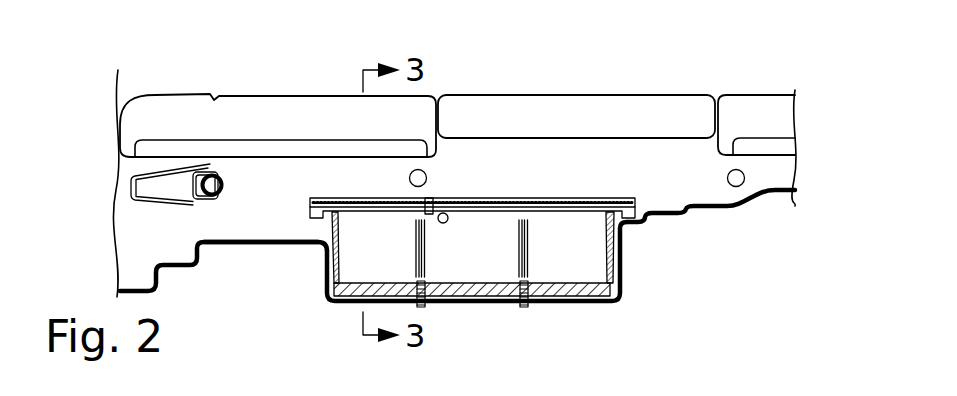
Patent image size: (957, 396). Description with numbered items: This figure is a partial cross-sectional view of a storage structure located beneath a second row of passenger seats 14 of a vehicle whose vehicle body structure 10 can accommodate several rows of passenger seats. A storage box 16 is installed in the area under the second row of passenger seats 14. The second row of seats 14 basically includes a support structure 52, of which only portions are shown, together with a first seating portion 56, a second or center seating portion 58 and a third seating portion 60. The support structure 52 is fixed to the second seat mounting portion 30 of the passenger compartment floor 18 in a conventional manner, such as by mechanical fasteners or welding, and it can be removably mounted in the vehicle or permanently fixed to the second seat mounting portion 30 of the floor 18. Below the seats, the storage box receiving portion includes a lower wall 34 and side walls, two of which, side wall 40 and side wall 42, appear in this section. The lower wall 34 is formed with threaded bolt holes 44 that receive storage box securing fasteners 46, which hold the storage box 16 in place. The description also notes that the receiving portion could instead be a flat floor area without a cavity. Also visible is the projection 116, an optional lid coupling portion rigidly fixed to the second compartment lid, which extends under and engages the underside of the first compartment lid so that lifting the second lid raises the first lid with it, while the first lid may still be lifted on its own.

The vehicle body structure 10 is at (205, 64).
The second row of passenger seats 14 is at (745, 82).
The storage box 16 is at (511, 180).
The passenger compartment floor 18 is at (220, 253).
The second seat mounting portion 30 is at (247, 242).
The lower wall 34 is at (486, 302).
The side wall 40 is at (322, 280).
The side wall 42 is at (624, 266).
The threaded bolt holes 44 is at (425, 304).
The storage box securing fasteners 46 is at (425, 282).
The support structure 52 is at (222, 184).
The first seating portion 56 is at (250, 112).
The second (center) seating portion 58 is at (628, 108).
The third seating portion 60 is at (777, 117).
The projection 116 is at (444, 213).